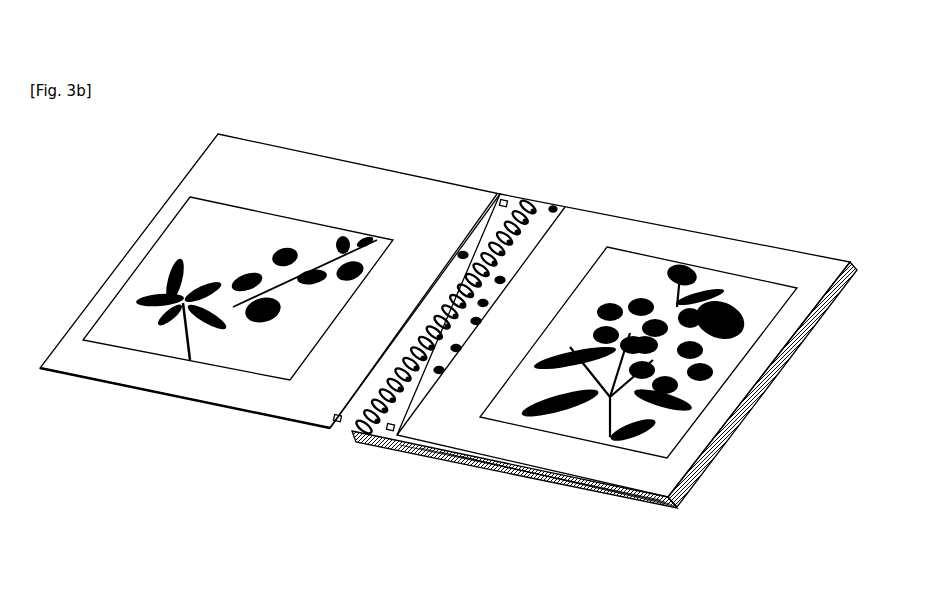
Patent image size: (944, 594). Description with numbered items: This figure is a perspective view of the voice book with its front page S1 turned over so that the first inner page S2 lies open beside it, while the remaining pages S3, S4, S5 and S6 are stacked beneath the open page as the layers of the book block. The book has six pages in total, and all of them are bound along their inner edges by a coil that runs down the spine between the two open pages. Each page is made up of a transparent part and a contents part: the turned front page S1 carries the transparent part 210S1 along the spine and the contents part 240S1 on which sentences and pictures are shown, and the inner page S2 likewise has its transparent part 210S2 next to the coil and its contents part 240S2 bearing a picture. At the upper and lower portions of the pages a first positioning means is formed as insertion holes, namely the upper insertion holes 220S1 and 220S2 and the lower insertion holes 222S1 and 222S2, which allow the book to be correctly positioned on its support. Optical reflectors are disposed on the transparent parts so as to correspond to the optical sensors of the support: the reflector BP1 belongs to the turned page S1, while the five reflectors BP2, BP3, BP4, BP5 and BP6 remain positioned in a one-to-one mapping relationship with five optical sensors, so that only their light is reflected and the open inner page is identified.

The contents part 240S1 is at (300, 173).
The contents part 240S2 is at (740, 255).
The transparent part 210S1 is at (525, 196).
The transparent part 210S2 is at (553, 203).
The insertion hole 220S1 is at (507, 194).
The insertion hole 220S2 is at (554, 207).
The insertion hole 222S1 is at (336, 418).
The insertion hole 222S2 is at (382, 436).
The optical reflector BP1 is at (462, 253).
The optical reflector BP2 is at (500, 280).
The optical reflector BP3 is at (484, 302).
The optical reflector BP4 is at (478, 320).
The optical reflector BP5 is at (457, 348).
The optical reflector BP6 is at (440, 370).
The front page S1 is at (168, 392).
The first inner page S2 is at (551, 476).
The page S3 is at (561, 479).
The page S4 is at (571, 482).
The page S5 is at (581, 485).
The page S6 is at (591, 488).